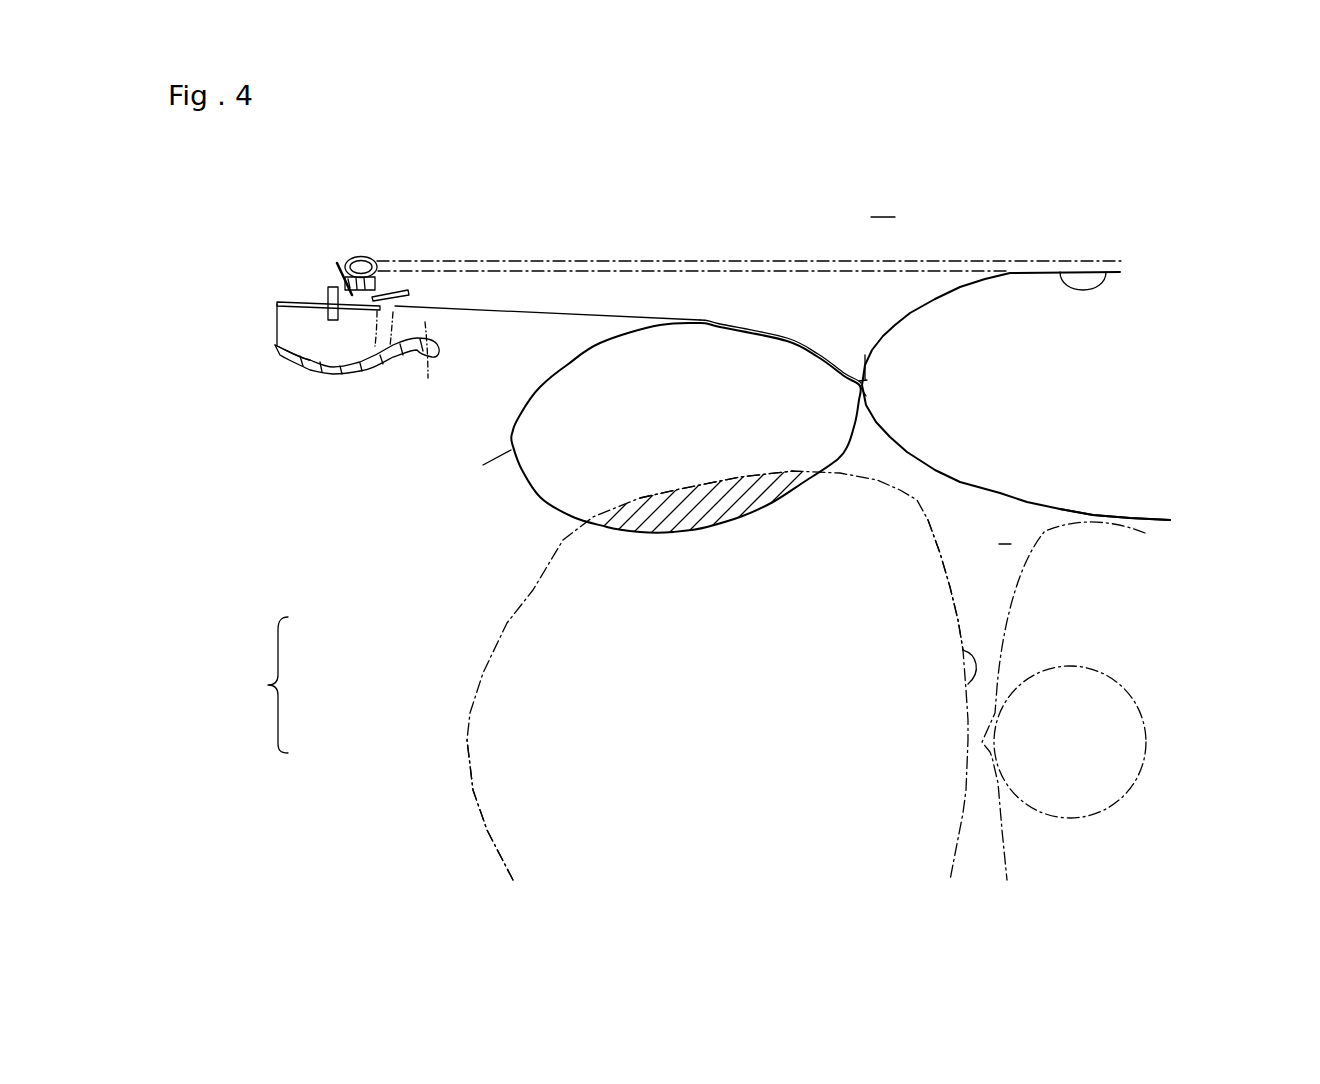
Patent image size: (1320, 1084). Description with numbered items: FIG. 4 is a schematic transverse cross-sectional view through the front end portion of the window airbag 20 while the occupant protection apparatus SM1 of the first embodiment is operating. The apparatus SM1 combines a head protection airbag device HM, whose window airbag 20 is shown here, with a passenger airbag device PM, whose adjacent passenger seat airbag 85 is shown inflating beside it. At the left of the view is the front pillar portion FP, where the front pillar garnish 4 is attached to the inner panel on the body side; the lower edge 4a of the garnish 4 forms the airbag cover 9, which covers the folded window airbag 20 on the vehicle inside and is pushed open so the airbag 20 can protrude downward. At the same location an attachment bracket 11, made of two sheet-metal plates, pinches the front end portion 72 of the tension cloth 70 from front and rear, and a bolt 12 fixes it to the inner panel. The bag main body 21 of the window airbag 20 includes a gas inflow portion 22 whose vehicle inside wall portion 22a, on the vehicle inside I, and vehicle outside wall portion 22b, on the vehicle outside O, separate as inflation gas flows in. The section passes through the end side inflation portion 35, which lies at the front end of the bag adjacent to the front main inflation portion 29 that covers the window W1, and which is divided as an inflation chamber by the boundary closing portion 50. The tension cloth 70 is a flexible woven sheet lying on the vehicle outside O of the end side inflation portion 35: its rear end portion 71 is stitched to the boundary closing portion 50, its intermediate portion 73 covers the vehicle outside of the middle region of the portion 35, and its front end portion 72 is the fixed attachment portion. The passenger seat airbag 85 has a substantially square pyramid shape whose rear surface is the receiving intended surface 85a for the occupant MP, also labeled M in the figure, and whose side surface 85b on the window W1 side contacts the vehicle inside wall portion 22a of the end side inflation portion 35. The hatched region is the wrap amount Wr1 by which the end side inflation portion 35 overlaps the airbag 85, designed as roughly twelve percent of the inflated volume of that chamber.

The front pillar garnish 4 is at (340, 374).
The lower edge of front pillar garnish 4a is at (401, 382).
The airbag cover 9 is at (425, 355).
The attachment bracket 11 is at (325, 318).
The bolt 12 is at (329, 286).
The front end portion of tension cloth 72 is at (325, 313).
The tension cloth 70 is at (622, 388).
The intermediate portion of tension cloth 73 is at (560, 316).
The end side inflation portion 35 is at (622, 388).
The gas inflow portion 22 is at (1093, 347).
The vehicle inside wall portion 22a is at (1133, 518).
The vehicle outside wall portion 22b is at (539, 382).
The front main inflation portion 29 is at (1046, 380).
The rear end portion of tension cloth 71 is at (858, 381).
The boundary closing portion 50 is at (863, 390).
The bag main body 21 is at (622, 388).
The window airbag 20 is at (622, 388).
The passenger seat airbag 85 is at (633, 675).
The receiving intended surface 85a is at (965, 684).
The side surface 85b is at (757, 484).
The head protection airbag device HM is at (455, 740).
The passenger airbag device PM is at (460, 810).
The occupant protection apparatus SM1 is at (250, 685).
The wrap amount Wr1 is at (688, 536).
The front pillar portion FP is at (292, 352).
The window W1 is at (480, 254).
The vehicle outside O is at (883, 204).
The vehicle inside I is at (1005, 531).
The occupant MP is at (1125, 701).
The measurement mark M is at (1098, 655).